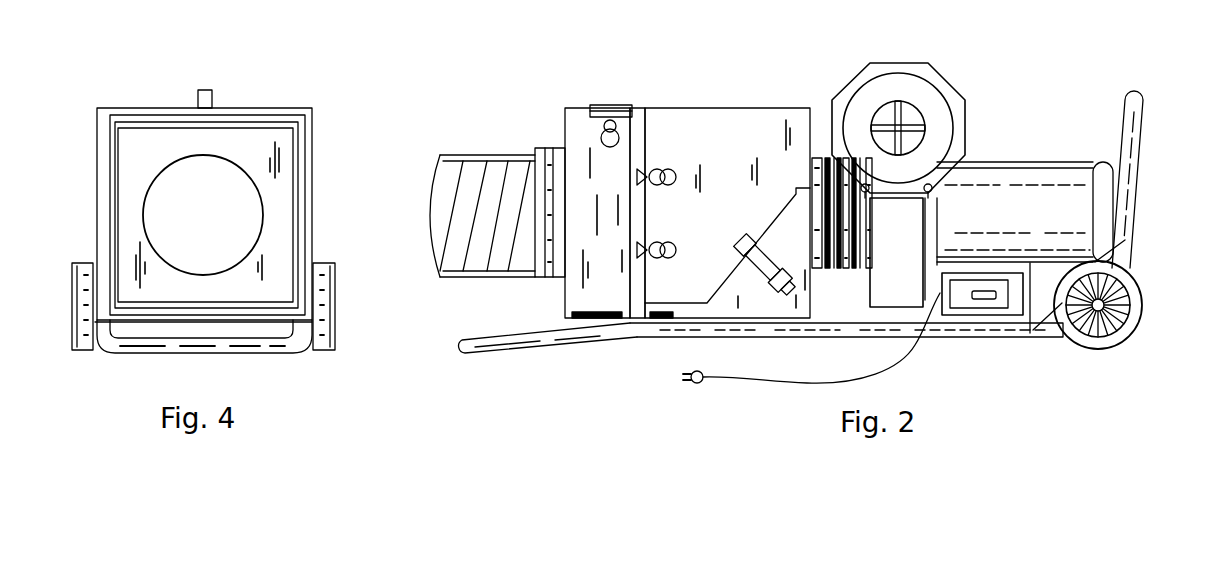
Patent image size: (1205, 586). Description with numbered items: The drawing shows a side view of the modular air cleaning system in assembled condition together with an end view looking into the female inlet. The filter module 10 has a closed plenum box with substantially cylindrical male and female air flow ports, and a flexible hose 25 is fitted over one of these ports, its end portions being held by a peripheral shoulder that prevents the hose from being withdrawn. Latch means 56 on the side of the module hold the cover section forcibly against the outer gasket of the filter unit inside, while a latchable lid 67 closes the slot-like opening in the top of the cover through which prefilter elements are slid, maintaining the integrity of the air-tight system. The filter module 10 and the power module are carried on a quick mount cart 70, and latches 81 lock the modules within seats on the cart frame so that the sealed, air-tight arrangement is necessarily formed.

In FIG. 4, the filter module 10 is at (148, 92).
In FIG. 2, the filter module 10 is at (735, 94).
In FIG. 2, the flexible hose 25 is at (478, 157).
In FIG. 2, the latch means 56 is at (661, 157).
In FIG. 2, the latchable lid 67 is at (610, 105).
In FIG. 2, the quick mount cart 70 is at (1013, 340).
In FIG. 2, the latches 81 is at (738, 236).